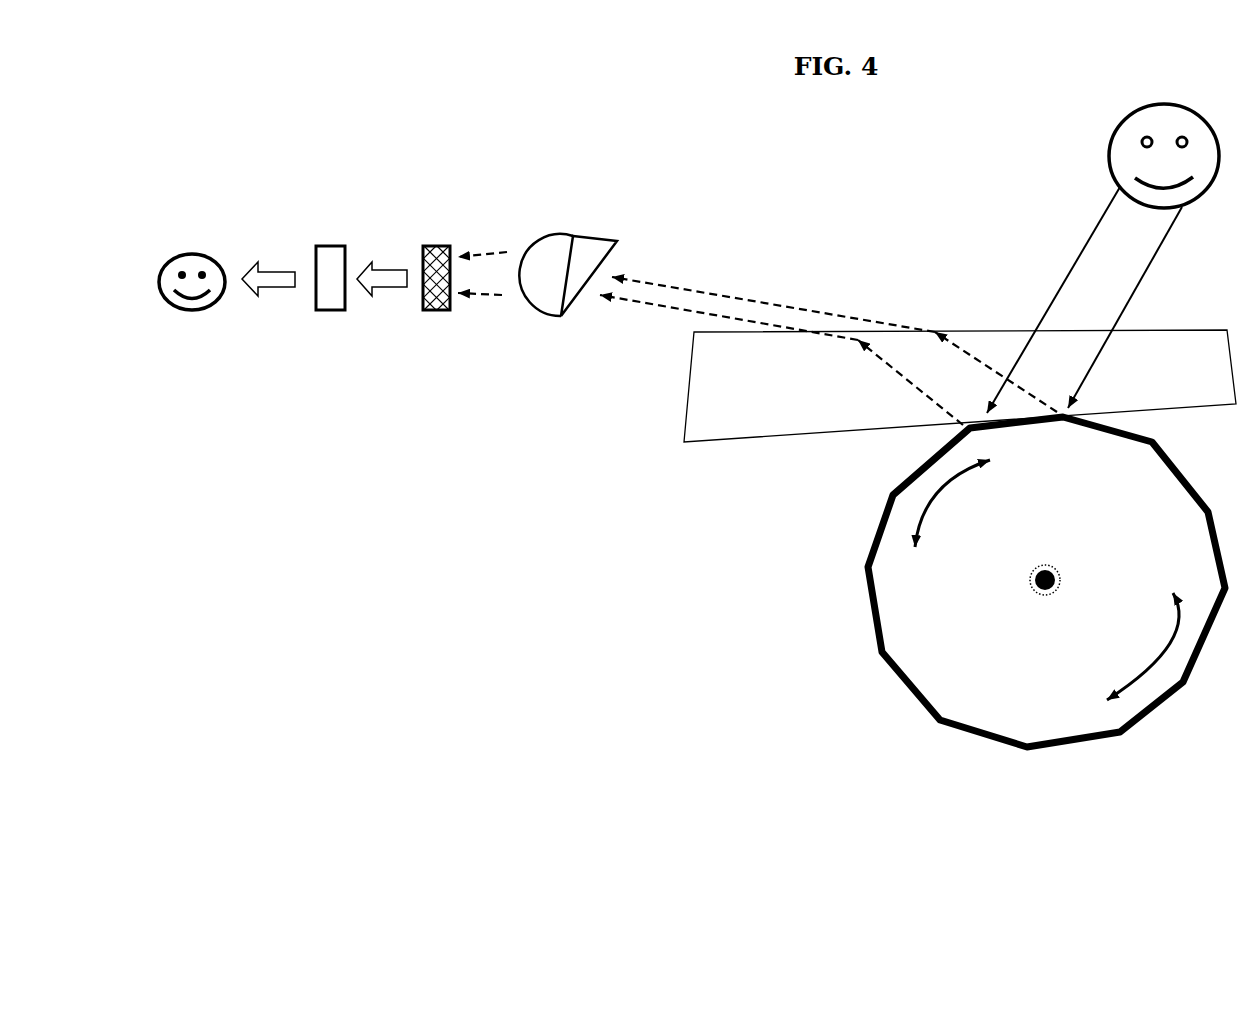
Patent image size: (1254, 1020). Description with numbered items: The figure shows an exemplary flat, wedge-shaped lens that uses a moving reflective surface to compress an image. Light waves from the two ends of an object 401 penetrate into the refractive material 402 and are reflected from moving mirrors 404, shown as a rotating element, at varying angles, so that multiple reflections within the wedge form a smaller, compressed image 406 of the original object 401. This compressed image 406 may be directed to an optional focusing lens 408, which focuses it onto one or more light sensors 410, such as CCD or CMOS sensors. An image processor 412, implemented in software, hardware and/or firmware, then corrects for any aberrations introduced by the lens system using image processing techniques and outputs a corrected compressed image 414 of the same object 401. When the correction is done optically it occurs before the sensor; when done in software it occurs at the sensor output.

The object 401 is at (1103, 258).
The refractive material 402 is at (692, 355).
The moving mirrors 404 is at (863, 578).
The compressed image 406 is at (613, 272).
The focusing lens 408 is at (549, 243).
The light sensor 410 is at (436, 247).
The image processor 412 is at (330, 250).
The compressed image 414 is at (192, 263).